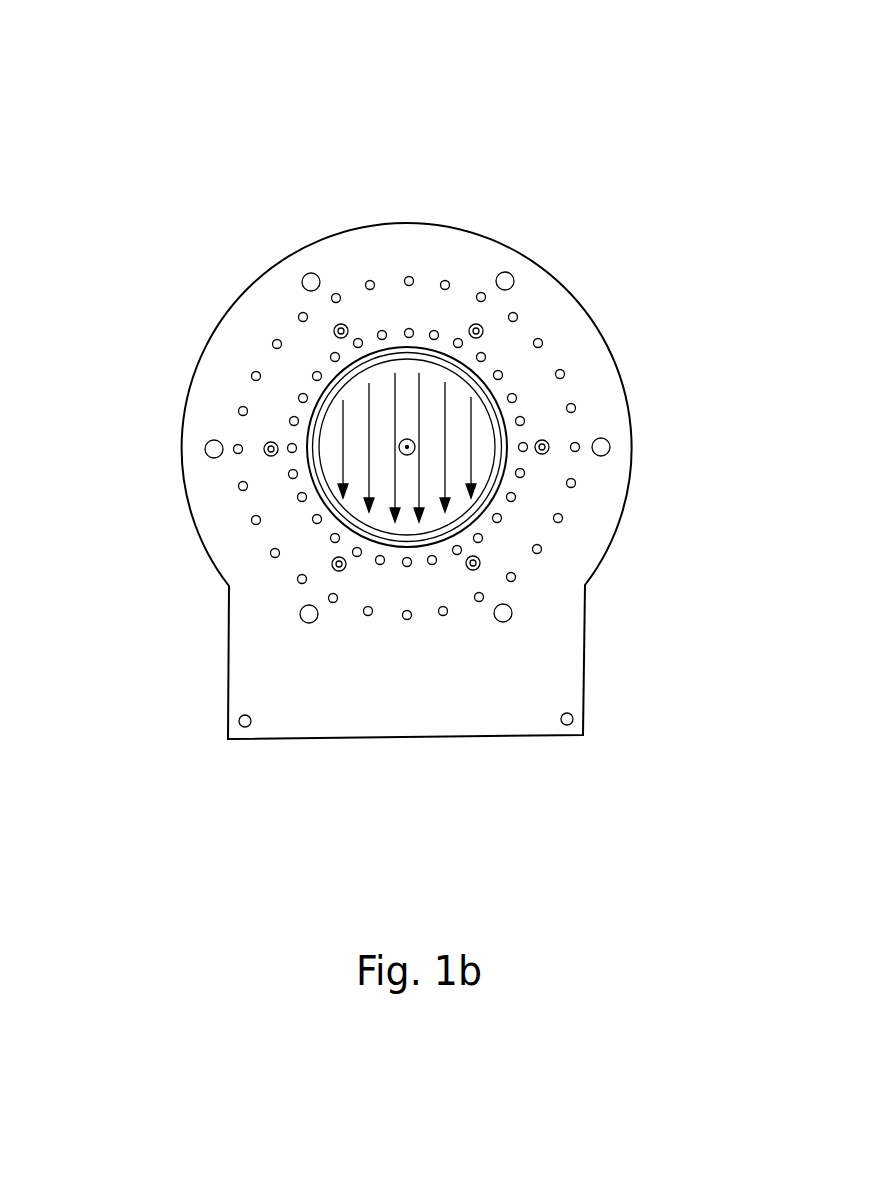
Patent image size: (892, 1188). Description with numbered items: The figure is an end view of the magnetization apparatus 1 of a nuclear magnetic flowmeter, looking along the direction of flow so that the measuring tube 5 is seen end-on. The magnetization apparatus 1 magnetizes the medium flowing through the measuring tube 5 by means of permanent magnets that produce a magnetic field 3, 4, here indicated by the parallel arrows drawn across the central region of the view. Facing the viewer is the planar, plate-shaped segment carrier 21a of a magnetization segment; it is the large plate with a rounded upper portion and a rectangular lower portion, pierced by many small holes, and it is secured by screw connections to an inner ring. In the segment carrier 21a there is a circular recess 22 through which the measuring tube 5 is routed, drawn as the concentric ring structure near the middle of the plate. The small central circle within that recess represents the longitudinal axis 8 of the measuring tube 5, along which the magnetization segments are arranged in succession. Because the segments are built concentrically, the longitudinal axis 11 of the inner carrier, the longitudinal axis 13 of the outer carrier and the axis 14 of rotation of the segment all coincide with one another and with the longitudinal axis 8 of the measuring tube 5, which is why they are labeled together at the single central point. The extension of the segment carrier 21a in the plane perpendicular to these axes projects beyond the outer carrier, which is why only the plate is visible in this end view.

The magnetization apparatus 1 is at (433, 381).
The segment carrier 21a is at (245, 323).
The circular recess 22 is at (308, 430).
The measuring tube 5 is at (495, 480).
The magnetic field 3 is at (540, 447).
The magnetic field 4 is at (462, 461).
The longitudinal axis of the measuring tube 8 is at (607, 382).
The longitudinal axis of the inner carrier 11 is at (607, 382).
The longitudinal axis of the outer carrier 13 is at (607, 382).
The axis of rotation of the segment 14 is at (414, 441).